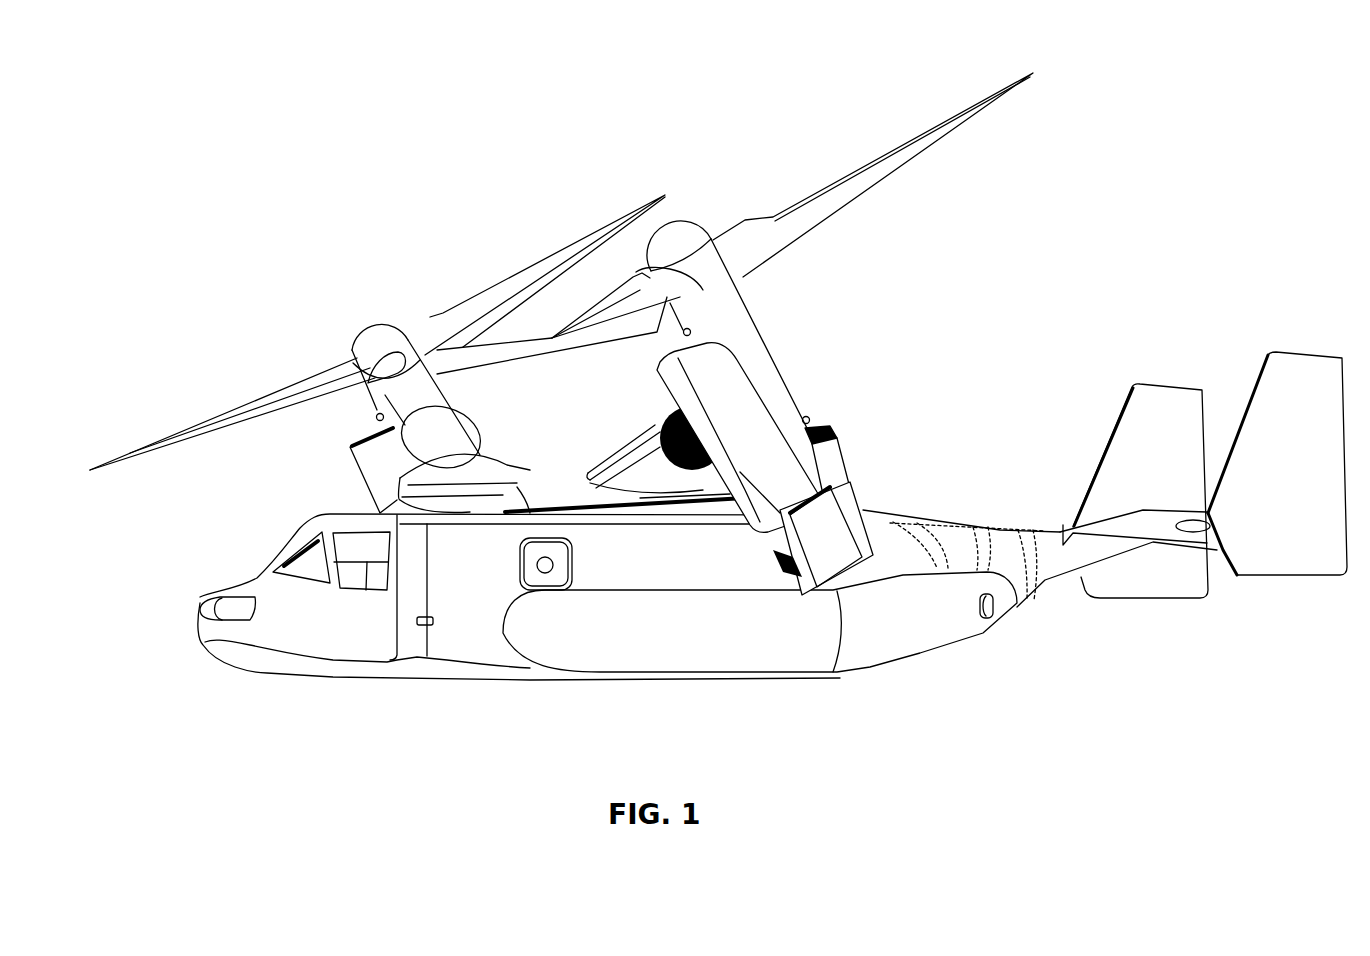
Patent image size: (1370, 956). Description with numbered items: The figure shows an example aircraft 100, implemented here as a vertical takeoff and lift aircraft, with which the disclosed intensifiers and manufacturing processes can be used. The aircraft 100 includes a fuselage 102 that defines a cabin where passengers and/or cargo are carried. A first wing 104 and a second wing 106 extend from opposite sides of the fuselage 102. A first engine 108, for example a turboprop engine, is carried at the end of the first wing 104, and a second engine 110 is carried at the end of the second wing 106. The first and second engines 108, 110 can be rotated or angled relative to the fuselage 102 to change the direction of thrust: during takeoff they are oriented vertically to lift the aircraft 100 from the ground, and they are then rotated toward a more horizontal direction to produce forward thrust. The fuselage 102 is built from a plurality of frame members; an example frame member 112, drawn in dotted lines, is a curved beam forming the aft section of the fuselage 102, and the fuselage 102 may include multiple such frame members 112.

The aircraft 100 is at (314, 150).
The fuselage 102 is at (353, 642).
The first wing 104 is at (633, 457).
The second wing 106 is at (513, 460).
The first engine 108 is at (684, 243).
The second engine 110 is at (372, 333).
The frame member 112 is at (933, 533).